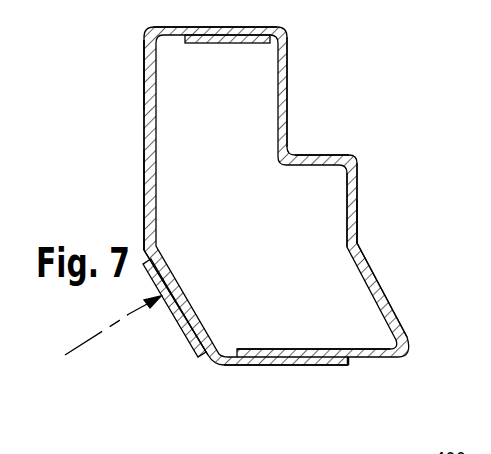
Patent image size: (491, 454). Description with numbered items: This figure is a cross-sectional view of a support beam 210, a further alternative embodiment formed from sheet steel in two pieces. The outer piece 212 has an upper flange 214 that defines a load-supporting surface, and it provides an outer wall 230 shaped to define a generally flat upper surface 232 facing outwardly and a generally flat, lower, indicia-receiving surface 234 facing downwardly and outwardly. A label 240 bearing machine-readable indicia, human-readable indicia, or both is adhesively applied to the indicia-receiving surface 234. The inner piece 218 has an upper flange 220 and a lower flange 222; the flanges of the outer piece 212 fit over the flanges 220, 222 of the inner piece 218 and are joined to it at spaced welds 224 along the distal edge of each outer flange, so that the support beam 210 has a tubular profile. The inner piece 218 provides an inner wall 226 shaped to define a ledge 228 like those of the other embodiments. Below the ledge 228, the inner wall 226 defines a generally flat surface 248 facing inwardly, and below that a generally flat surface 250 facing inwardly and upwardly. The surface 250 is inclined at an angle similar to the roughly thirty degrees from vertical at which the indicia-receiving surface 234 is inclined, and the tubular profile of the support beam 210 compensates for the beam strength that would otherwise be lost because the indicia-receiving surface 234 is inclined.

The support beam 210 is at (116, 173).
The outer piece 212 is at (156, 153).
The upper flange 214 is at (263, 33).
The inner piece 218 is at (347, 210).
The upper flange 220 is at (224, 41).
The lower flange 222 is at (315, 348).
The welds 224 is at (269, 33).
The inner wall 226 is at (358, 183).
The ledge 228 is at (301, 149).
The outer wall 230 is at (147, 212).
The upper surface 232 is at (144, 70).
The indicia-receiving surface 234 is at (176, 306).
The label 240 is at (195, 343).
The flat surface 248 is at (358, 216).
The inclined surface 250 is at (384, 298).